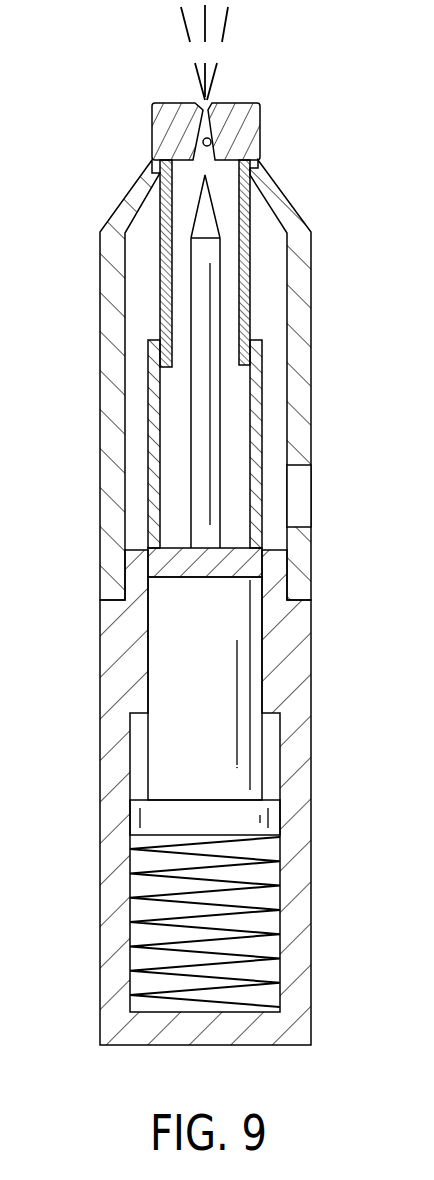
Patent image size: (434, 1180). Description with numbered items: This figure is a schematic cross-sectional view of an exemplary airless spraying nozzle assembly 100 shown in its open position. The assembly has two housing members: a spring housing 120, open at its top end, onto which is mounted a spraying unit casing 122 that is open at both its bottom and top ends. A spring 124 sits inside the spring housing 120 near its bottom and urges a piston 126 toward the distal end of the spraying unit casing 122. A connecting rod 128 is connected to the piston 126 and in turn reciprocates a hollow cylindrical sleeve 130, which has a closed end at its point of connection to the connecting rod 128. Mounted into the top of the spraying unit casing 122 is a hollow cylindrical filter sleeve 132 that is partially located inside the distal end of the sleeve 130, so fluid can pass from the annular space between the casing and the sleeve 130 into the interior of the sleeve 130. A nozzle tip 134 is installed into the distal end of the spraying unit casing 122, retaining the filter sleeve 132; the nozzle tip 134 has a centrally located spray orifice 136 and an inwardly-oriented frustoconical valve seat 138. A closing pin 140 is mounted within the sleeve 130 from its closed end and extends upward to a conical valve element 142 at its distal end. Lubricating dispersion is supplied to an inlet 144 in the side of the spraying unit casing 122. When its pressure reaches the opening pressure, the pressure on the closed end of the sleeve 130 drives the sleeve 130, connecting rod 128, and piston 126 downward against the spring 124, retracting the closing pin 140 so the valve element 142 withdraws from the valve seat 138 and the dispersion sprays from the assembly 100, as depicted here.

The spraying nozzle assembly 100 is at (78, 1048).
The spring housing 120 is at (100, 865).
The spraying unit casing 122 is at (100, 442).
The spring 124 is at (178, 880).
The piston 126 is at (147, 818).
The connecting rod 128 is at (148, 762).
The sleeve 130 is at (158, 500).
The filter sleeve 132 is at (158, 253).
The nozzle tip 134 is at (177, 131).
The spray orifice 136 is at (210, 104).
The valve seat 138 is at (212, 143).
The closing pin 140 is at (202, 402).
The valve element 142 is at (200, 212).
The inlet 144 is at (293, 522).